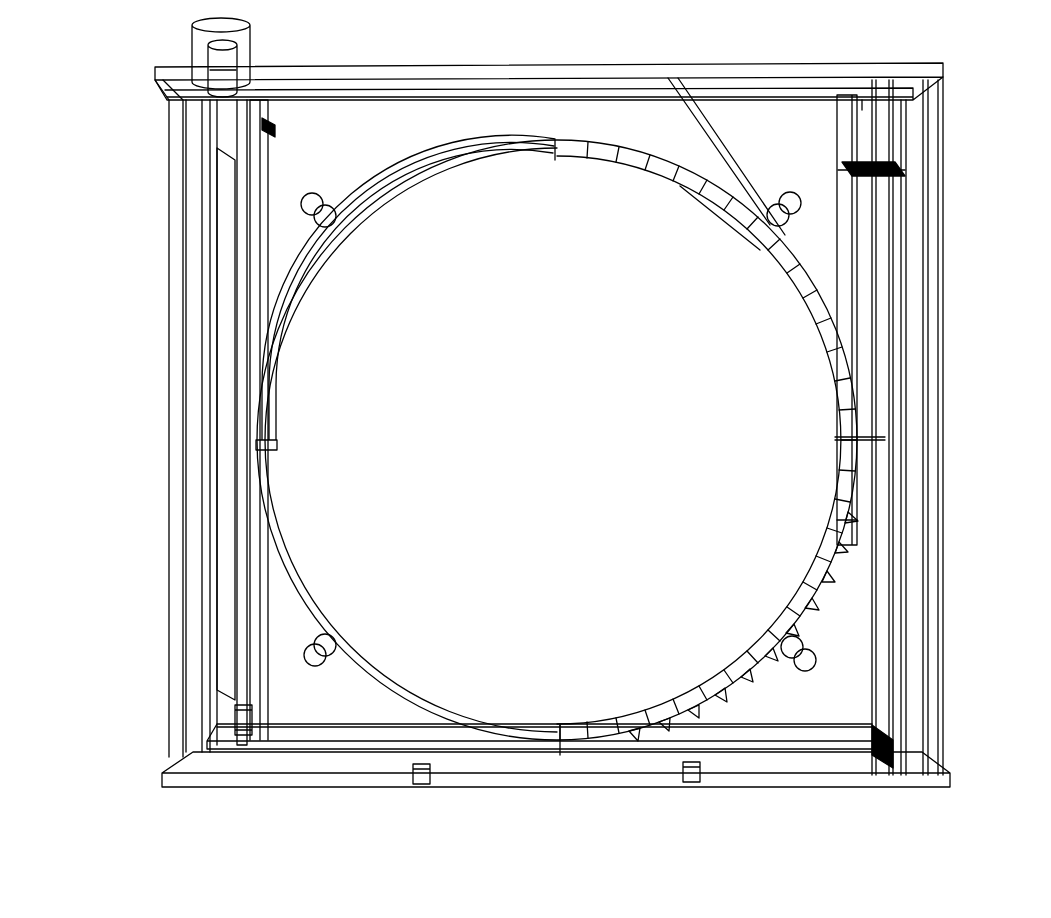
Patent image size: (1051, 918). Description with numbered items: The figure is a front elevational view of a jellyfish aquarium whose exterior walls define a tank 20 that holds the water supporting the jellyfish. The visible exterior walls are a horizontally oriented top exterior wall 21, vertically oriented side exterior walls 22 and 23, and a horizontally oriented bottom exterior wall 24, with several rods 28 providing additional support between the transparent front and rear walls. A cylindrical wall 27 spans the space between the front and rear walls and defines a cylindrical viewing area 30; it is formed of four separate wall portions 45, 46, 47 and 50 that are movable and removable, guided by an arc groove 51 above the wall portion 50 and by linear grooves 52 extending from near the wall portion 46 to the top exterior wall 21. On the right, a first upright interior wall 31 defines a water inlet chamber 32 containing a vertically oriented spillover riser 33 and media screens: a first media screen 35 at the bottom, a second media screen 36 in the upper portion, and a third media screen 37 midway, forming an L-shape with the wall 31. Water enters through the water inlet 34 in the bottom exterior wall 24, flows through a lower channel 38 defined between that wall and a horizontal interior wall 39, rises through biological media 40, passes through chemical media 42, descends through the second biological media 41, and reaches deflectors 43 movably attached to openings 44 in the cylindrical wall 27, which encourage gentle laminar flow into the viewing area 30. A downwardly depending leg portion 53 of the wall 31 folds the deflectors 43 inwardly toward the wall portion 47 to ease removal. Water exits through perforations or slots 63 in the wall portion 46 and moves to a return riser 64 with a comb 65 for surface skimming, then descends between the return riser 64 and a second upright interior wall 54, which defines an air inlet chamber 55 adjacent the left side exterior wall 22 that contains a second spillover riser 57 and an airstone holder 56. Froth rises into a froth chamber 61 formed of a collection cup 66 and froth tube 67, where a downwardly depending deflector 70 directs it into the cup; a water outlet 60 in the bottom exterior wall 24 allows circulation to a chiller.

The tank 20 is at (968, 90).
The top exterior wall 21 is at (604, 70).
The side exterior wall 22 is at (166, 418).
The side exterior wall 23 is at (910, 426).
The bottom exterior wall 24 is at (262, 790).
The cylindrical wall 27 is at (557, 447).
The rods 28 is at (333, 200).
The viewing area 30 is at (570, 457).
The first upright interior wall 31 is at (862, 290).
The water inlet chamber 32 is at (916, 345).
The spillover riser 33 is at (888, 203).
The water inlet 34 is at (692, 783).
The first media screen 35 is at (880, 765).
The second media screen 36 is at (895, 168).
The third media screen 37 is at (860, 437).
The lower channel 38 is at (541, 762).
The horizontal interior wall 39 is at (380, 730).
The biological media 40 is at (917, 498).
The biological media 41 is at (875, 320).
The chemical media 42 is at (885, 95).
The deflectors 43 is at (830, 590).
The openings 44 is at (830, 545).
The wall portion 45 is at (392, 662).
The wall portion 46 is at (706, 192).
The wall portion 47 is at (715, 682).
The wall portion 50 is at (368, 232).
The arc groove 51 is at (428, 165).
The linear grooves 52 is at (708, 122).
The downwardly depending leg portion 53 is at (850, 470).
The second upright interior wall 54 is at (248, 255).
The air inlet chamber 55 is at (213, 410).
The airstone holder 56 is at (252, 718).
The second spillover riser 57 is at (222, 212).
The water outlet 60 is at (425, 787).
The froth chamber 61 is at (202, 65).
The perforations or slots 63 is at (706, 440).
The return riser 64 is at (288, 420).
The comb 65 is at (272, 130).
The collection cup 66 is at (252, 48).
The froth tube 67 is at (215, 62).
The deflector 70 is at (250, 22).